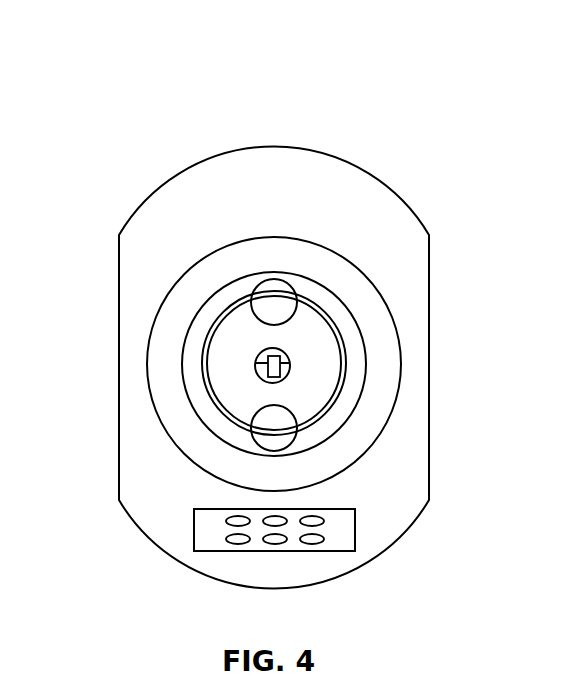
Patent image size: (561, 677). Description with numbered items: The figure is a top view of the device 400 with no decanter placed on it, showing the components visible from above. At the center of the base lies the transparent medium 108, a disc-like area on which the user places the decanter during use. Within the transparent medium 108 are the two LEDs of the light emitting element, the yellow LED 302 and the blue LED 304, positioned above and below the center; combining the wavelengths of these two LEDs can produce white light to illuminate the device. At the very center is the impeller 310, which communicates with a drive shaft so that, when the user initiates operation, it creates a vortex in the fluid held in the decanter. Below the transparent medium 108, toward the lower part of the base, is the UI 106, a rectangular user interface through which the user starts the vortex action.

The top view of the device 400 is at (156, 78).
The transparent medium 108 is at (235, 352).
The blue LED 304 is at (280, 290).
The yellow LED 302 is at (270, 433).
The impeller 310 is at (290, 363).
The UI 106 is at (350, 535).